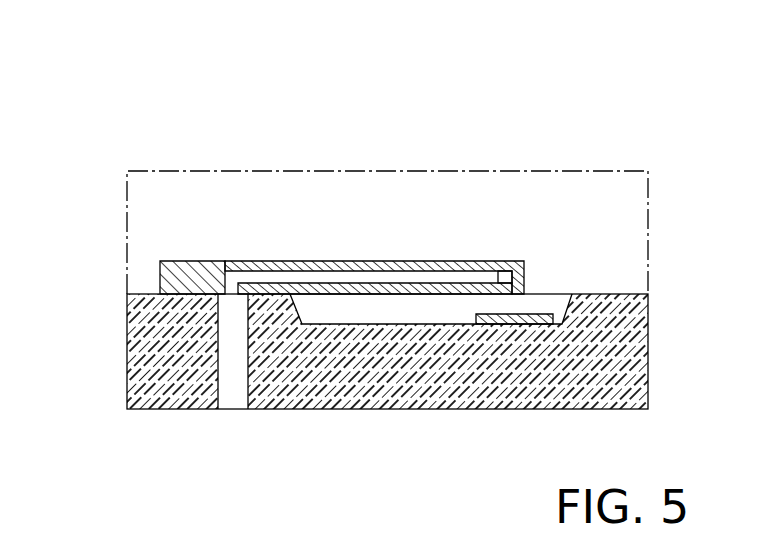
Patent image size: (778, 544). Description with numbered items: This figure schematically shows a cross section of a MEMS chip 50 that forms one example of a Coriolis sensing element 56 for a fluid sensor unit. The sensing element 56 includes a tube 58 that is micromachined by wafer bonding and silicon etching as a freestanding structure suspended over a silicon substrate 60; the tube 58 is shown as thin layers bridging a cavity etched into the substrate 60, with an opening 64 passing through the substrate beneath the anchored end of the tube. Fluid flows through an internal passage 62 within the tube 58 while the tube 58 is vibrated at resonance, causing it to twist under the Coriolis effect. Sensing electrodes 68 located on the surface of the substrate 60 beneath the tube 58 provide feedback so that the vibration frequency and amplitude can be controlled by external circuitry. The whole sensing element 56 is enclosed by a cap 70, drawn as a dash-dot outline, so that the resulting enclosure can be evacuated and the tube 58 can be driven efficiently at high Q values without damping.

The MEMS chip 50 is at (103, 70).
The sensing element 56 is at (200, 235).
The tube 58 is at (405, 260).
The silicon substrate 60 is at (632, 352).
The internal passage 62 is at (297, 278).
The via / opening 64 is at (232, 390).
The sensing electrodes 68 is at (550, 313).
The cap 70 is at (587, 170).